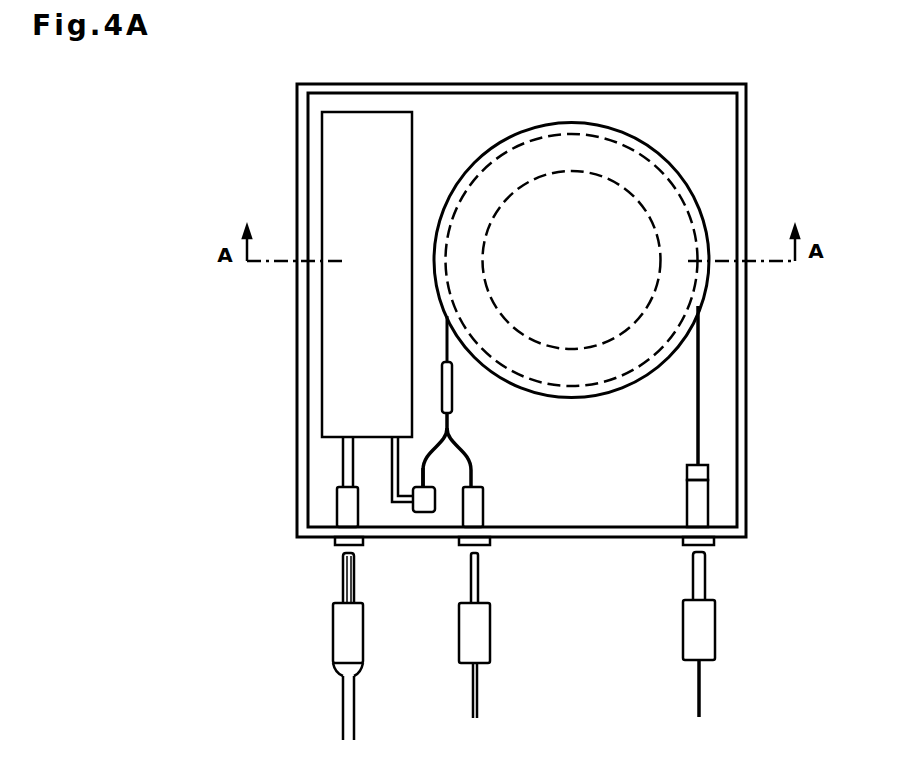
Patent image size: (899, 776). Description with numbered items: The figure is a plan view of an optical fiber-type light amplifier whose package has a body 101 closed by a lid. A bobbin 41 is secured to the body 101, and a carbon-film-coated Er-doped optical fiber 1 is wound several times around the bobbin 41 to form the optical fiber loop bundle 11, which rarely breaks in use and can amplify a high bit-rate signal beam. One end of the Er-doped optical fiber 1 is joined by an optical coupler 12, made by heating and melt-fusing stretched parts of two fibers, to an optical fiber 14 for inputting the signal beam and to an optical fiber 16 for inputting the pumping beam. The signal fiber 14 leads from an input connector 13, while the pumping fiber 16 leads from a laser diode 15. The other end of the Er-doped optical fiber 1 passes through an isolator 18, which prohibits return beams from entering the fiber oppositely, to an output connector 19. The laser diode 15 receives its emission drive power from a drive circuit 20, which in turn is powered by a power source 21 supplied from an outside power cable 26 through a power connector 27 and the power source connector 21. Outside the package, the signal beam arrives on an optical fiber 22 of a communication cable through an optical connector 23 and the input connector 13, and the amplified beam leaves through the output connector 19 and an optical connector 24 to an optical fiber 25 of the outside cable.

The body 101 is at (747, 112).
The drive circuit 20 is at (322, 355).
The bobbin 41 is at (598, 124).
The optical fiber loop bundle 11 is at (517, 156).
The Er-doped optical fiber 1 is at (700, 360).
The optical coupler 12 is at (453, 388).
The optical fiber for inputting a signal beam 14 is at (467, 447).
The optical fiber for inputting a pumping beam 16 is at (422, 466).
The laser diode 15 is at (423, 513).
The input connector 13 is at (485, 500).
The power source 21 is at (337, 515).
The isolator 18 is at (708, 470).
The output connector 19 is at (710, 502).
The electrical plug 27 is at (333, 625).
The outside power cable 26 is at (343, 715).
The optical connector 23 is at (490, 620).
The optical fiber of an optical communication cable 22 is at (478, 685).
The optical connector 24 is at (715, 607).
The optical fiber of the outside optical communication cable 25 is at (702, 682).